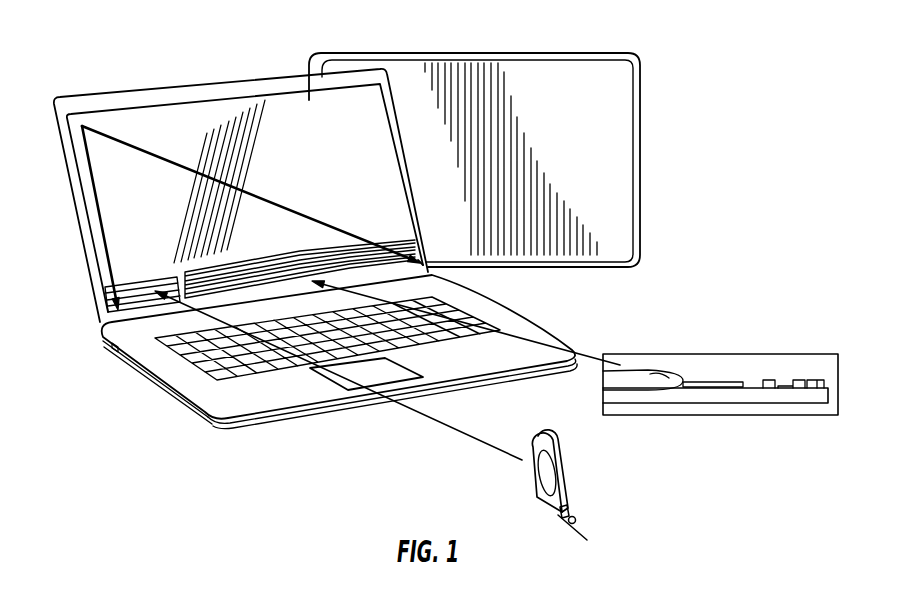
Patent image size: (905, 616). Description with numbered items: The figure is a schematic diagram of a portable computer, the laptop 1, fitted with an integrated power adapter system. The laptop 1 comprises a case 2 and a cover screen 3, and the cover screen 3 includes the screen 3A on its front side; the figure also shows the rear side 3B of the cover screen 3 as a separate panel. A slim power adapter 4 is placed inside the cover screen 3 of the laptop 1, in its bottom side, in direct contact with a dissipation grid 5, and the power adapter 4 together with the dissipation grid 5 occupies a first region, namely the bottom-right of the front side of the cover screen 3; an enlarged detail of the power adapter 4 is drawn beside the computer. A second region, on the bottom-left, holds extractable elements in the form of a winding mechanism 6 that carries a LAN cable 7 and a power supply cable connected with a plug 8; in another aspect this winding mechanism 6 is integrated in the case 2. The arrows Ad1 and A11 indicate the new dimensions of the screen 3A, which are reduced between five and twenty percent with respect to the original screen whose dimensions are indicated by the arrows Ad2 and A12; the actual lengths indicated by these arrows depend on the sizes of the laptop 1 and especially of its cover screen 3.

The laptop 1 is at (43, 125).
The case 2 is at (277, 403).
The cover screen 3 is at (182, 88).
The screen 3A is at (287, 108).
The rear side 3B is at (543, 70).
The power adapter 4 is at (700, 403).
The dissipation grid 5 is at (437, 291).
The winding mechanism 6 is at (568, 476).
The LAN cable 7 is at (573, 532).
The plug 8 is at (576, 518).
The operation direction A11 is at (79, 218).
The operation direction A12 is at (322, 355).
The arrow Ad1 is at (251, 194).
The arrow Ad2 is at (460, 296).